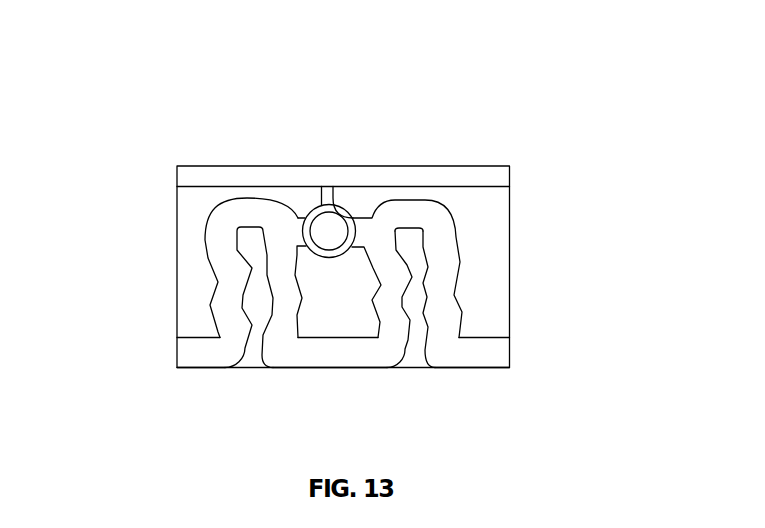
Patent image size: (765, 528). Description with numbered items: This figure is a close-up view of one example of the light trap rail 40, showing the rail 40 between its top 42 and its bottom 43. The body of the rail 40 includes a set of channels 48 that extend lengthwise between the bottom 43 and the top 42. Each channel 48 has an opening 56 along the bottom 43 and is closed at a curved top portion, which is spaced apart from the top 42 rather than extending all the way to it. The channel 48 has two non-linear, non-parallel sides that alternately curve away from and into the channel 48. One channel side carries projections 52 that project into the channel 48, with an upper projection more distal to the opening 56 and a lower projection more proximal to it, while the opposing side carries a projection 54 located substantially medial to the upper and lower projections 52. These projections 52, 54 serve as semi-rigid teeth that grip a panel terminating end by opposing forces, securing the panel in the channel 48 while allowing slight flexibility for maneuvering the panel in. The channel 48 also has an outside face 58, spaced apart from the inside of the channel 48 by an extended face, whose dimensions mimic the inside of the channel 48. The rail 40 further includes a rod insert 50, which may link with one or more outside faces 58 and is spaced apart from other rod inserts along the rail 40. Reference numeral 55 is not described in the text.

The rail 40 is at (258, 90).
The top 42 is at (487, 165).
The bottom 43 is at (475, 368).
The channel 48 is at (251, 377).
The rod insert 50 is at (267, 237).
The projection 52 is at (412, 268).
The projection 54 is at (427, 293).
The first cavity 55 is at (265, 237).
The opening 56 is at (410, 362).
The outside face 58 is at (440, 218).